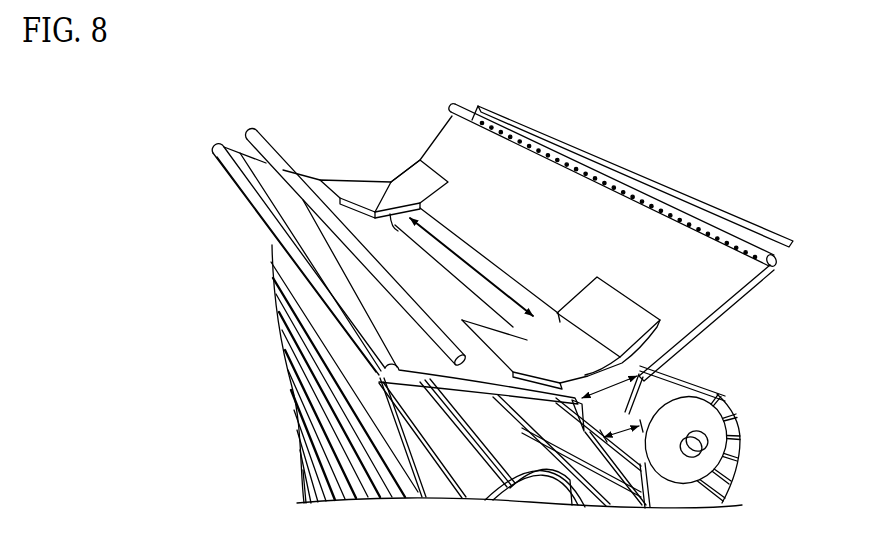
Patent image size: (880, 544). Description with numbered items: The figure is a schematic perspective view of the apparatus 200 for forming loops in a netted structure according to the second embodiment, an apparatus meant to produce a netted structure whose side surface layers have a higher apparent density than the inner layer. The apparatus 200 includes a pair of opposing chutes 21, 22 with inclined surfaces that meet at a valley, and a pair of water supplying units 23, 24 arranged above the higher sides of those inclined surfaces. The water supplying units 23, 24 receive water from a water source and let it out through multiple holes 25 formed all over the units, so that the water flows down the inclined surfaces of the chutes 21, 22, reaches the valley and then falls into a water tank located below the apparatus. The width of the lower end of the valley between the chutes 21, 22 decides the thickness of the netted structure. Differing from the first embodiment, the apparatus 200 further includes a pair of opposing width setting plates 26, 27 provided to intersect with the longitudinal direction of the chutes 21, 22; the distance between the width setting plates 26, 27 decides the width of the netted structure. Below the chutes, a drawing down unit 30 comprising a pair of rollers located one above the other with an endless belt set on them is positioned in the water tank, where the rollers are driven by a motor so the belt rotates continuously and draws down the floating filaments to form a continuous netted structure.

The apparatus for forming loops in a netted structure 200 is at (531, 97).
The chute 21 is at (313, 234).
The chute 22 is at (732, 298).
The water supplying unit 23 is at (293, 183).
The water supplying unit 24 is at (657, 203).
The holes 25 is at (758, 266).
The width setting plate 26 is at (377, 189).
The width setting plate 27 is at (568, 338).
The drawing down unit 30 is at (310, 305).